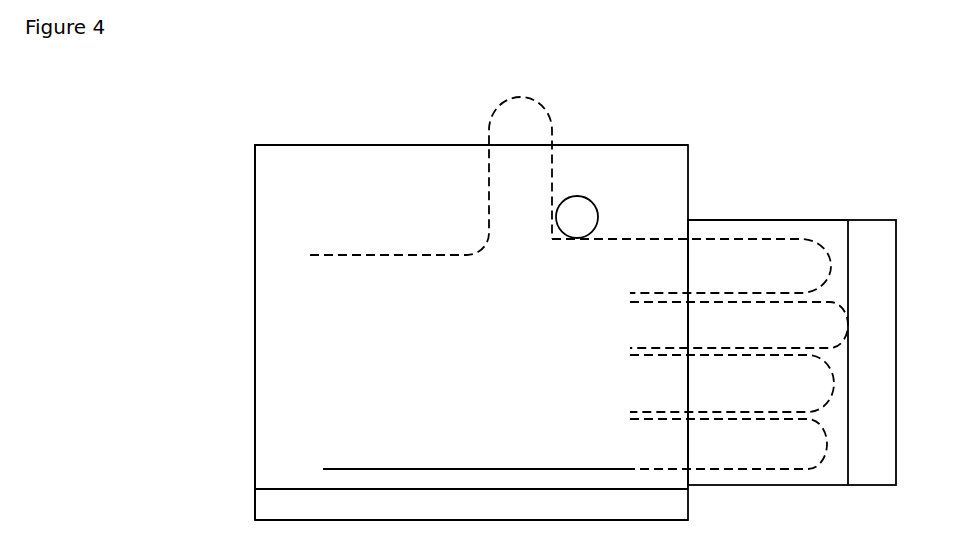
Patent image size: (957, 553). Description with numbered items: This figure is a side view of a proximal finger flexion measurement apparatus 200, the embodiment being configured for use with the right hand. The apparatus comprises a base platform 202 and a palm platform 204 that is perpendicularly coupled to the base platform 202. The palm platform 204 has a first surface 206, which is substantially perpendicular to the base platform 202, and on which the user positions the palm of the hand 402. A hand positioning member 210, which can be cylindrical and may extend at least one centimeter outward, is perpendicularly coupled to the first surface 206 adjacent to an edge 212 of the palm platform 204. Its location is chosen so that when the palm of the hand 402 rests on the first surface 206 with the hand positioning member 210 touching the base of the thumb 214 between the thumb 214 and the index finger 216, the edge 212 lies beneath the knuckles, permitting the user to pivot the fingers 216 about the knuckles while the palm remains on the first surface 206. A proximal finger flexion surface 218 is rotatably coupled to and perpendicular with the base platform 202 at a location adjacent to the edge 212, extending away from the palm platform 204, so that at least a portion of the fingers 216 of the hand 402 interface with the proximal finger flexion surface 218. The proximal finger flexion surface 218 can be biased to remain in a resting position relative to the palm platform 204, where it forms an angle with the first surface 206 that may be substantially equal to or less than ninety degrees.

The proximal finger flexion measurement apparatus 200 is at (255, 364).
The base platform 202 is at (255, 505).
The palm platform 204 is at (255, 177).
The first surface 206 is at (348, 195).
The hand positioning member 210 is at (597, 207).
The edge 212 is at (690, 220).
The thumb 214 is at (488, 192).
The index finger 216 is at (708, 240).
The proximal finger flexion surface 218 is at (790, 220).
The hand 402 is at (505, 365).